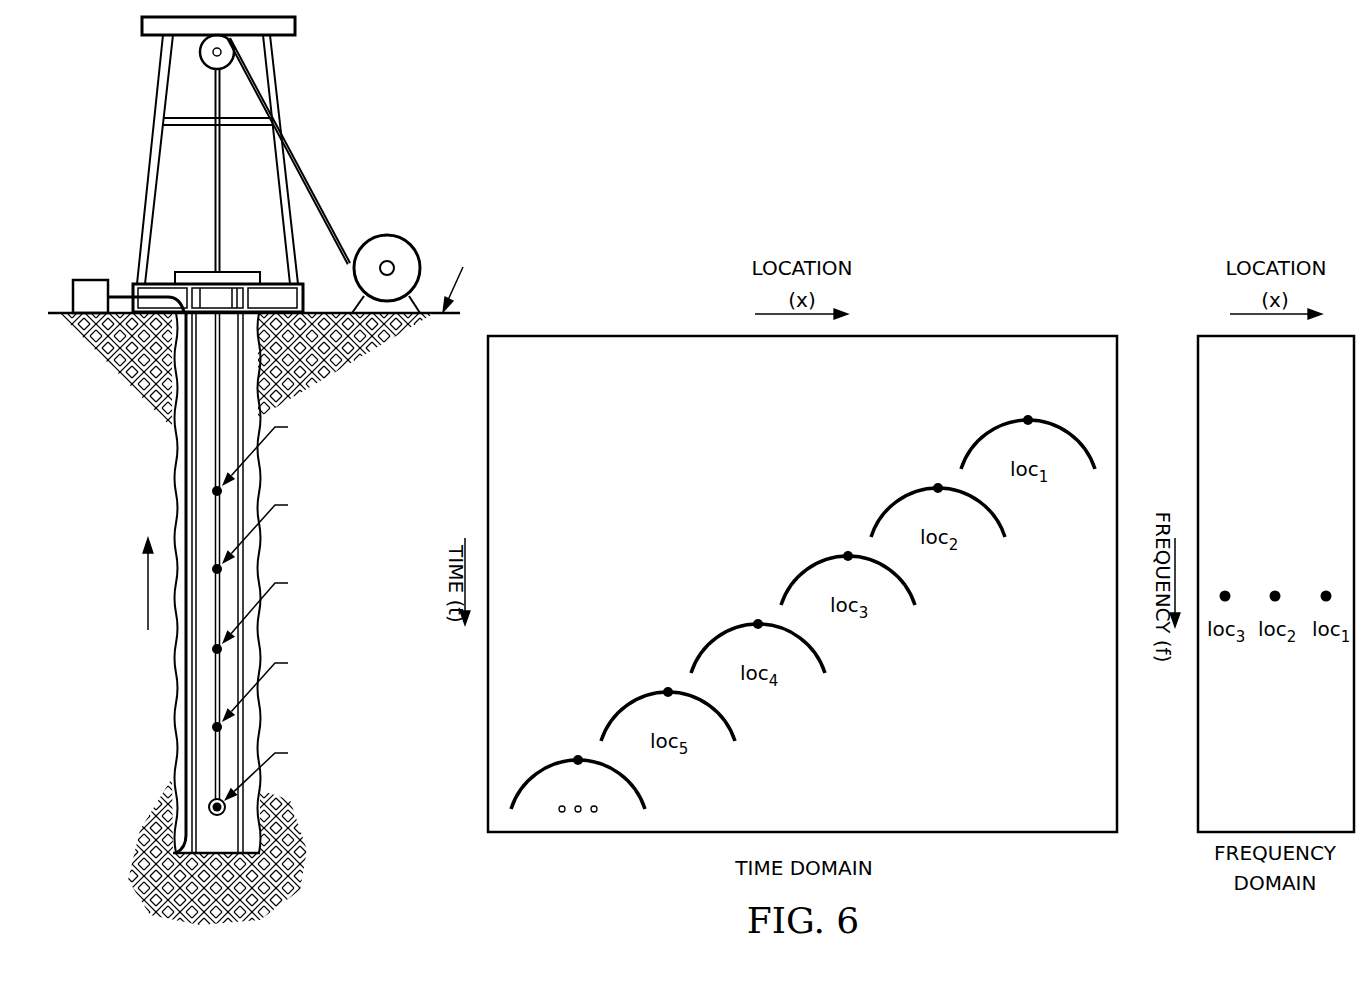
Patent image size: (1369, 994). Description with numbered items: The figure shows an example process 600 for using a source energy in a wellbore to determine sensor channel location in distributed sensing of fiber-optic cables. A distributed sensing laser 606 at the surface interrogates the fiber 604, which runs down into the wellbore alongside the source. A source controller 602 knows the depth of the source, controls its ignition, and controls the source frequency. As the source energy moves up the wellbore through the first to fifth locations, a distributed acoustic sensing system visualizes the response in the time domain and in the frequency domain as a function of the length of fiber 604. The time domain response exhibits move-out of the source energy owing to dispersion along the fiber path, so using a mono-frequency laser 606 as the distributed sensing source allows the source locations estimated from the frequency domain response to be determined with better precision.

The distributed acoustic sensing system 600 is at (978, 123).
The source controller 602 is at (393, 237).
The fiber 604 is at (187, 705).
The distributed sensing (DS) laser 606 is at (90, 280).